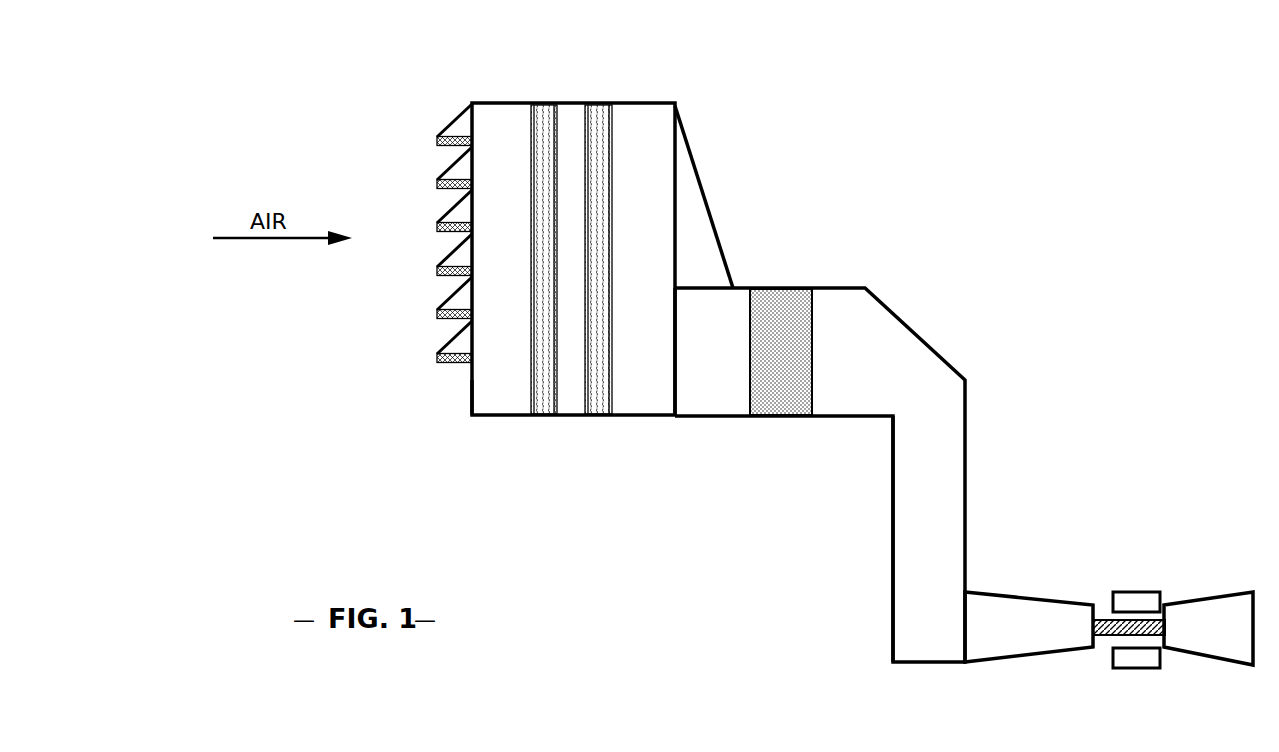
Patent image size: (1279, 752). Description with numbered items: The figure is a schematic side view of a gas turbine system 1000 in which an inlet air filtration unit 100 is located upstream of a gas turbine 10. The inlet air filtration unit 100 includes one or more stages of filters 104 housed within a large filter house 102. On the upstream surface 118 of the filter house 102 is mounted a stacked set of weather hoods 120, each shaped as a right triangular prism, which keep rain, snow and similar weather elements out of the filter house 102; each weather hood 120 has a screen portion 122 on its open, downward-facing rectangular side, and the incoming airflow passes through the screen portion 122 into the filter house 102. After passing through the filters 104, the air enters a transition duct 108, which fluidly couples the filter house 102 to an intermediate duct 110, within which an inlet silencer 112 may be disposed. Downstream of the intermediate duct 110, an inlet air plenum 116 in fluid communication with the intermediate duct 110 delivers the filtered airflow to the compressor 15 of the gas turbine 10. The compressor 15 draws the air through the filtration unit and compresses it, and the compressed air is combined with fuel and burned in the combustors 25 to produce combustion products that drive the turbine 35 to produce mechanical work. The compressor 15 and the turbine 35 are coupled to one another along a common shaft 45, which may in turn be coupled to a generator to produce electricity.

The gas turbine system 1000 is at (1108, 217).
The inlet air filtration unit 100 is at (786, 208).
The filter house 102 is at (521, 103).
The filters 104 is at (600, 103).
The transition duct 108 is at (700, 188).
The intermediate duct 110 is at (693, 420).
The inlet silencer 112 is at (777, 288).
The inlet air plenum 116 is at (892, 518).
The upstream surface 118 is at (470, 391).
The weather hoods 120 is at (445, 130).
The screen portion 122 is at (447, 142).
The gas turbine 10 is at (1184, 541).
The compressor 15 is at (1065, 600).
The combustors 25 is at (1154, 592).
The turbine 35 is at (1243, 592).
The common shaft 45 is at (1104, 636).